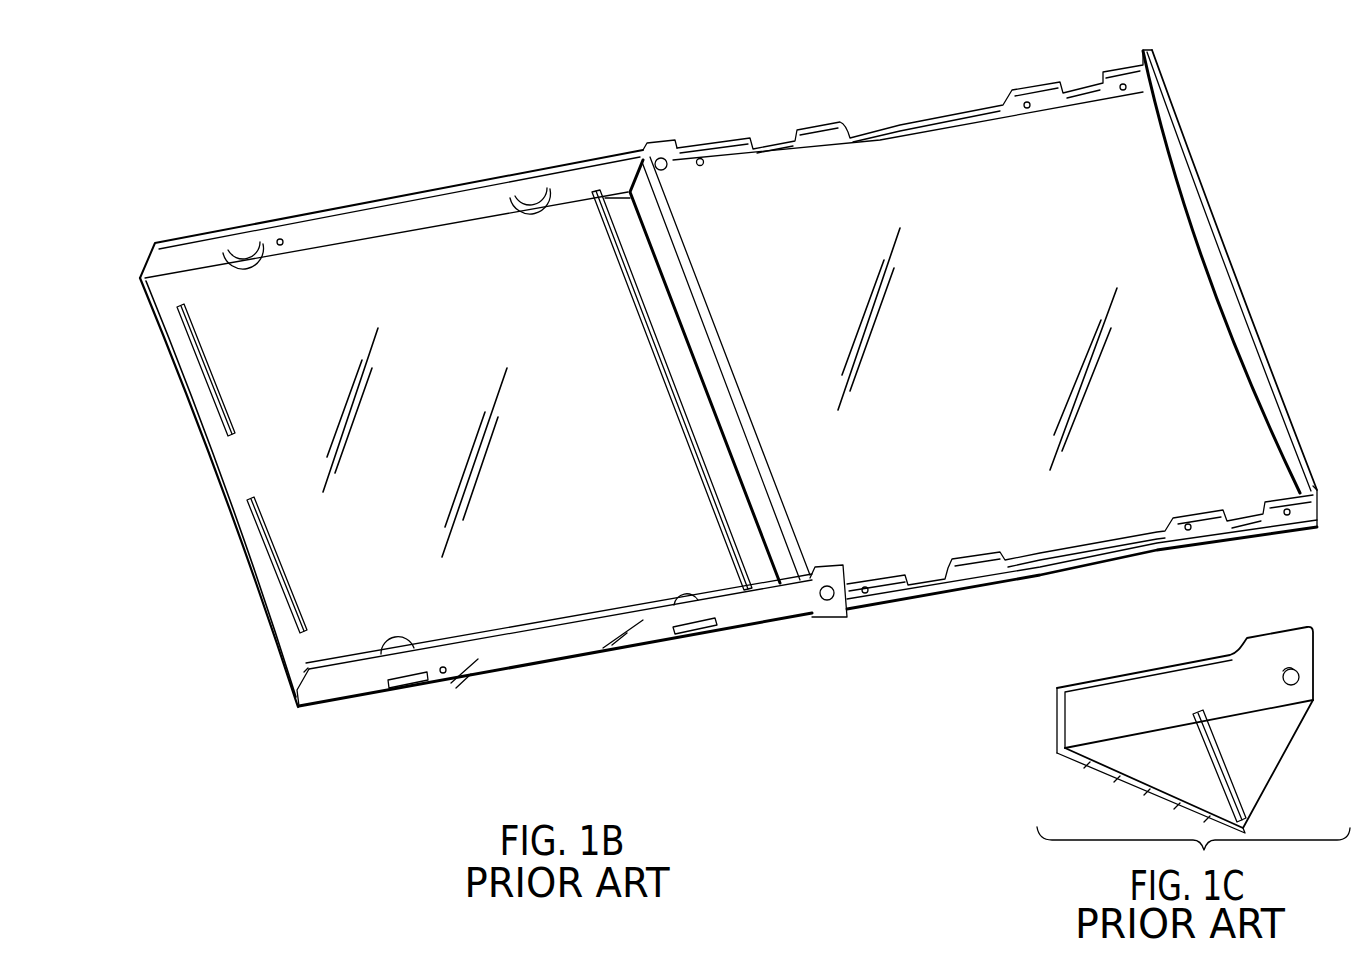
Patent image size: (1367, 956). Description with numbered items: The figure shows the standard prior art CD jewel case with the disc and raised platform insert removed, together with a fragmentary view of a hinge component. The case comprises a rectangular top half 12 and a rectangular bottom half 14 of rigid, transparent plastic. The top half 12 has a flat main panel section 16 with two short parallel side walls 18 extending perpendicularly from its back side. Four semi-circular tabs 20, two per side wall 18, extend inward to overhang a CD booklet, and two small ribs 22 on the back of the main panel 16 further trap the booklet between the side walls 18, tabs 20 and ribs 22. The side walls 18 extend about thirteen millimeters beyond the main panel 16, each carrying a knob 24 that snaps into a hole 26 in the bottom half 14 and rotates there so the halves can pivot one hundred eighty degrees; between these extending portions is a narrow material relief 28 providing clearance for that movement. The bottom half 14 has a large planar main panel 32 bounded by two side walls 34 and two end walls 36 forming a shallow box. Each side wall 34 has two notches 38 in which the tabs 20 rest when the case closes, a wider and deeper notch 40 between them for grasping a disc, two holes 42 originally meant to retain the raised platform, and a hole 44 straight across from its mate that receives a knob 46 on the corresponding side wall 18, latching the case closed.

In FIG. 1B, the top half 12 is at (415, 272).
In FIG. 1C, the top half 12 is at (1057, 720).
In FIG. 1B, the bottom half 14 is at (1148, 318).
In FIG. 1B, the main panel section 16 is at (419, 361).
In FIG. 1C, the main panel section 16 is at (1158, 755).
In FIG. 1B, the side walls 18 is at (343, 210).
In FIG. 1C, the side walls 18 is at (1160, 692).
In FIG. 1B, the semi-circular tabs 20 is at (245, 252).
In FIG. 1B, the ribs 22 is at (202, 377).
In FIG. 1C, the ribs 22 is at (1215, 763).
In FIG. 1B, the knob 24 is at (661, 158).
In FIG. 1C, the knob 24 is at (1296, 683).
In FIG. 1B, the holes 26 is at (667, 155).
In FIG. 1B, the material relief 28 is at (625, 212).
In FIG. 1B, the main panel 32 is at (944, 355).
In FIG. 1B, the side walls 34 is at (830, 142).
In FIG. 1B, the end walls 36 is at (708, 328).
In FIG. 1B, the notches 38 is at (773, 137).
In FIG. 1B, the notch 40 is at (930, 122).
In FIG. 1B, the holes 42 is at (704, 158).
In FIG. 1B, the holes 44 is at (1026, 109).
In FIG. 1B, the knobs 46 is at (280, 239).